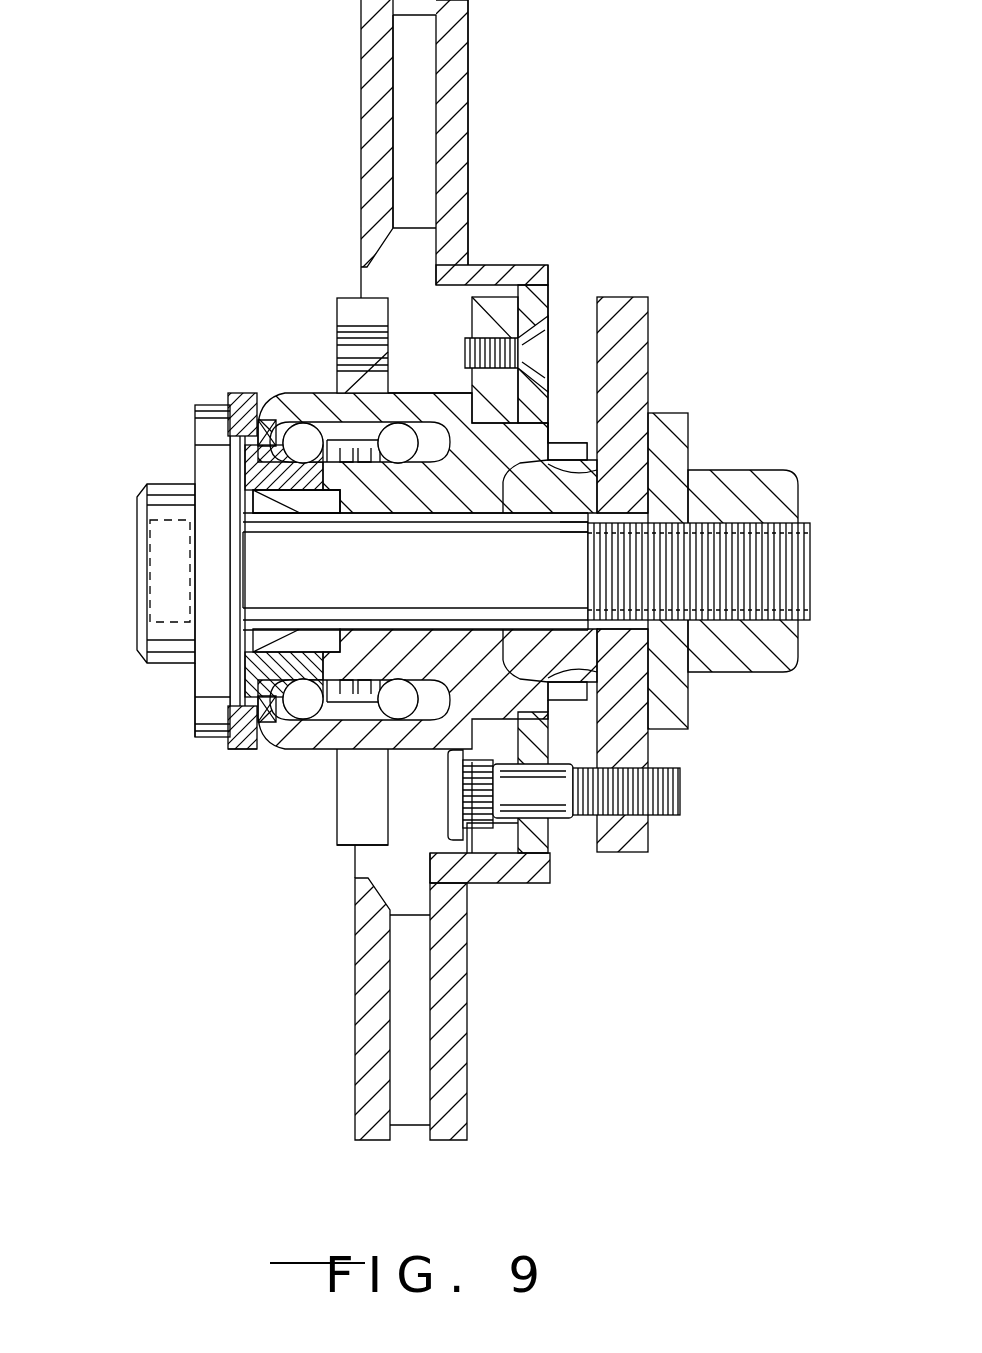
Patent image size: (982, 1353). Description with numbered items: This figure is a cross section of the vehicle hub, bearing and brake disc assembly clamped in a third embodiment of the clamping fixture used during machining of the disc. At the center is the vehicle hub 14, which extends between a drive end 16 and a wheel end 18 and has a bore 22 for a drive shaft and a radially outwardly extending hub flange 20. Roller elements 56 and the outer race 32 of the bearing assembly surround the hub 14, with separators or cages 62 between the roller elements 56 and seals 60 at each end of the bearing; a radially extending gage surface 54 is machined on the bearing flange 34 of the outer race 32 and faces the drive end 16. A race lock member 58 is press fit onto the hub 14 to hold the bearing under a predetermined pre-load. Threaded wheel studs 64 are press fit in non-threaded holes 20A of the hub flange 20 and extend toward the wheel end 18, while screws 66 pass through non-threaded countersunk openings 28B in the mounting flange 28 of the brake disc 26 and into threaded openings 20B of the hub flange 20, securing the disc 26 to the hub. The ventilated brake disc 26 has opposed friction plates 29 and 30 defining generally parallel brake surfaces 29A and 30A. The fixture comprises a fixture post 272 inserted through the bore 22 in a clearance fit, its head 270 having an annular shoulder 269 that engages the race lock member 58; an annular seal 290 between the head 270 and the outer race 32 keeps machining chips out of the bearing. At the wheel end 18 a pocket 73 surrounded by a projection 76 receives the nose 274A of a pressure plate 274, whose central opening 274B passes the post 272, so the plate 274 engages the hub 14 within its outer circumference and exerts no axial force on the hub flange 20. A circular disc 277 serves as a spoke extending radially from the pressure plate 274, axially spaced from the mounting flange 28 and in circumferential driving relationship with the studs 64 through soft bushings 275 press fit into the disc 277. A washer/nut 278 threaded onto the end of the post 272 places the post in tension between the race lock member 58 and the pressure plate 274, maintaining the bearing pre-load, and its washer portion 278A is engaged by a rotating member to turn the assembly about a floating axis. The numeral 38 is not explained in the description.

The vehicle hub 14 is at (335, 650).
The drive end 16 is at (228, 502).
The wheel end 18 is at (610, 490).
The hub flange 20 is at (497, 333).
The non-threaded holes 20A is at (503, 850).
The threaded openings 20B is at (470, 355).
The bore 22 is at (280, 630).
The brake disc 26 is at (470, 1055).
The mounting flange 28 is at (553, 300).
The non-threaded countersunk openings 28B is at (568, 440).
The friction plate 29 is at (372, 150).
The brake surface 29A is at (372, 110).
The friction plate 30 is at (455, 98).
The brake surface 30A is at (468, 63).
The outer race 32 is at (282, 748).
The bearing flange 34 is at (352, 795).
The upper sleeve 38 is at (338, 332).
The gage surface 54 is at (330, 842).
The roller elements 56 is at (400, 430).
The race lock member 58 is at (225, 690).
The seals 60 is at (283, 445).
The separators or cages 62 is at (330, 515).
The threaded wheel studs 64 is at (545, 825).
The screws 66 is at (545, 335).
The pocket 73 is at (495, 615).
The projection 76 is at (575, 450).
The annular shoulder 269 is at (240, 567).
The head 270 is at (212, 442).
The fixture post 272 is at (800, 605).
The pressure plate 274 is at (575, 628).
The nose 274A is at (578, 523).
The central opening 274B is at (540, 564).
The bushings 275 is at (660, 825).
The circular disc 277 is at (635, 310).
The washer/nut 278 is at (740, 675).
The washer portion 278A is at (688, 440).
The annular seal 290 is at (262, 425).